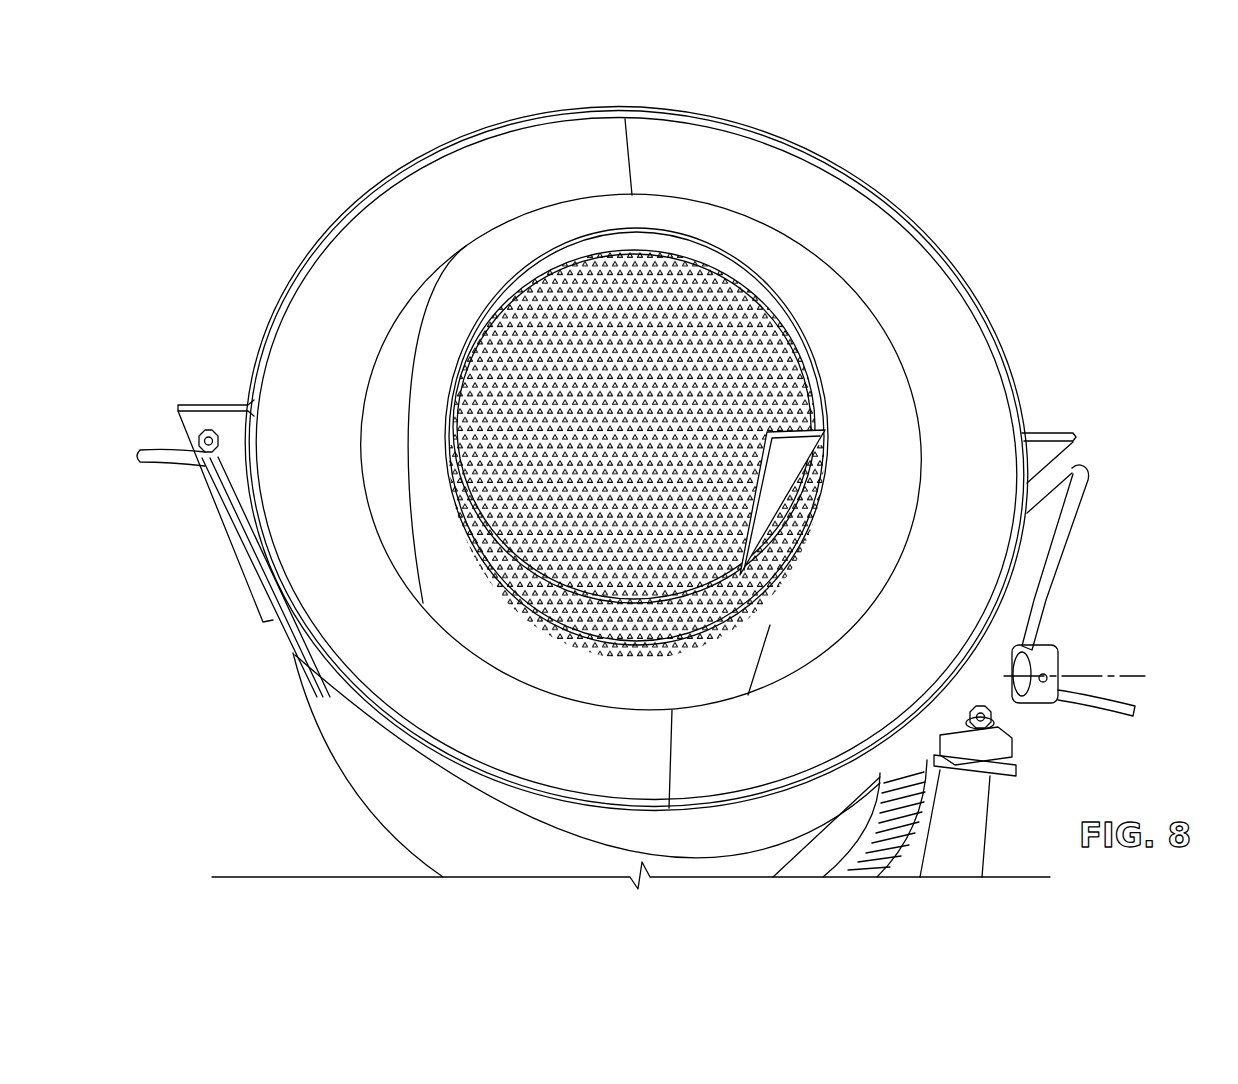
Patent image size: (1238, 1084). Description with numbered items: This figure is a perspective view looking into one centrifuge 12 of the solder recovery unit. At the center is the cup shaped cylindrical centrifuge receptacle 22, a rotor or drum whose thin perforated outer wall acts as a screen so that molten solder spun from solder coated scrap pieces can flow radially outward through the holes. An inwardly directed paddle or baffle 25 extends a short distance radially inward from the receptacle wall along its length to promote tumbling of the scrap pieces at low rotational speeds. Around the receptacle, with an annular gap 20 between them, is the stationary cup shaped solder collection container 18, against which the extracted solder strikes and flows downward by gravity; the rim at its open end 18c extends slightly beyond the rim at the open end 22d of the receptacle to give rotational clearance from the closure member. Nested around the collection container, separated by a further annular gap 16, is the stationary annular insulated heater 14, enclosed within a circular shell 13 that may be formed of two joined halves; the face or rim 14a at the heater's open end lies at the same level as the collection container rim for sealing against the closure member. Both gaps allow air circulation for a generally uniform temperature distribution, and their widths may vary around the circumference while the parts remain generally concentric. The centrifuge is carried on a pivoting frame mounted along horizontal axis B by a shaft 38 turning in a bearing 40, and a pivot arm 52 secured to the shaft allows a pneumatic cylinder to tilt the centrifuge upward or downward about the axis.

The centrifuge 12 is at (1008, 289).
The shell 13 is at (1013, 365).
The insulated heater 14 is at (912, 248).
The face or rim 14a is at (385, 604).
The annular gap 16 is at (880, 383).
The solder collection container 18 is at (779, 292).
The open end of the solder collection container 18c is at (832, 540).
The annular gap 20 is at (487, 288).
The centrifuge receptacle 22 is at (451, 352).
The open end of the centrifuge receptacle 22d is at (798, 342).
The baffle 25 is at (800, 440).
The shaft 38 is at (1010, 673).
The bearing 40 is at (993, 707).
The pivot arm 52 is at (1058, 652).
The horizontal axis B is at (1110, 676).